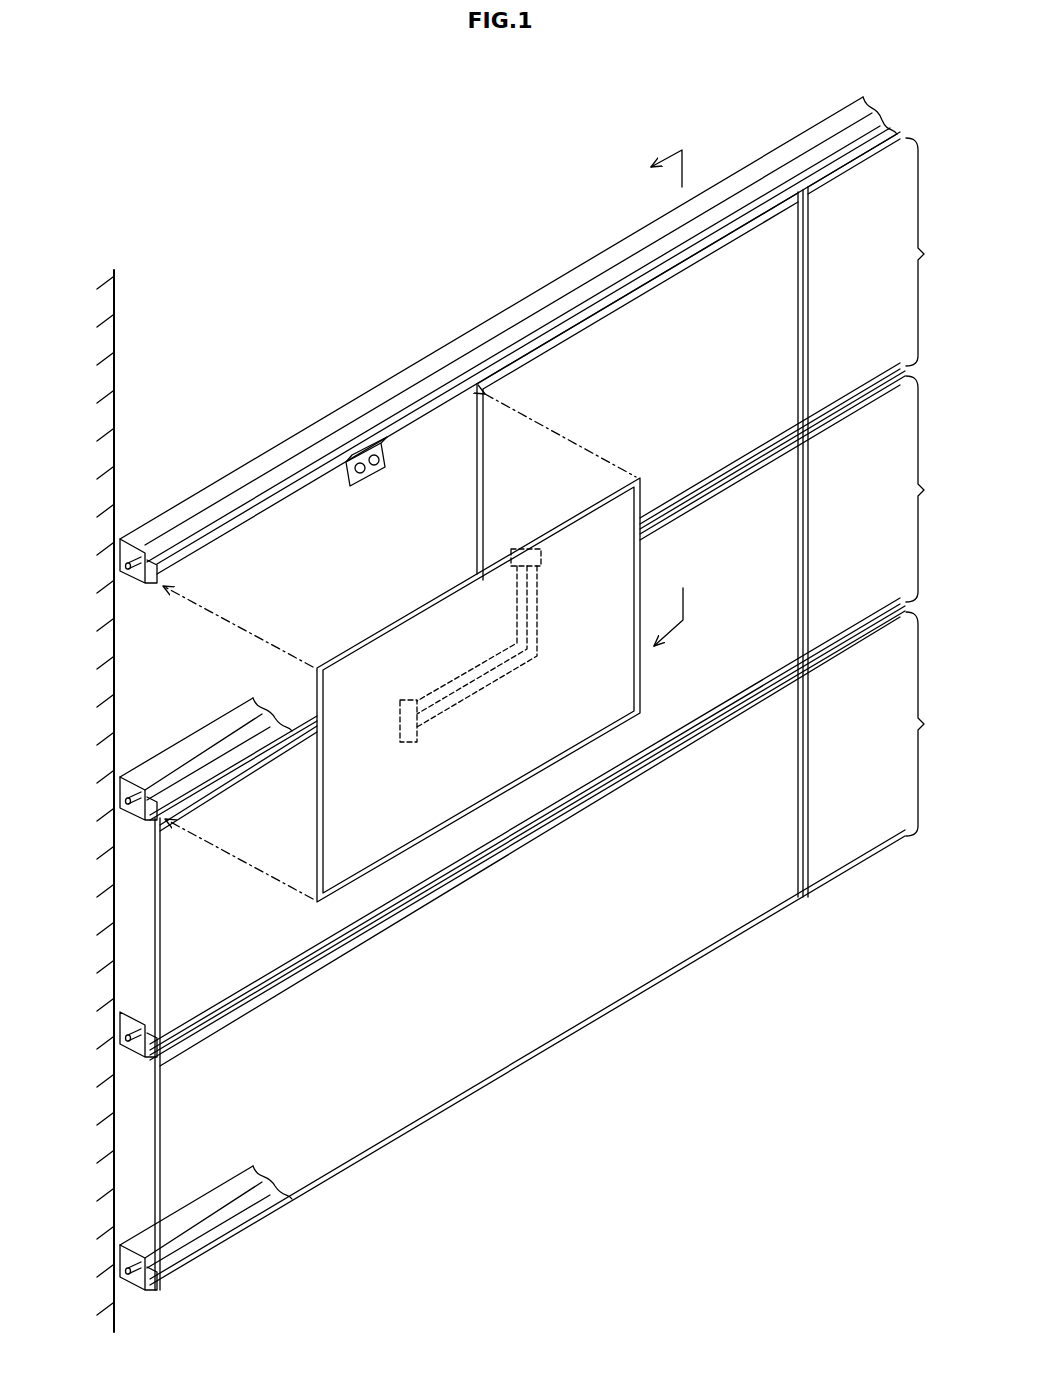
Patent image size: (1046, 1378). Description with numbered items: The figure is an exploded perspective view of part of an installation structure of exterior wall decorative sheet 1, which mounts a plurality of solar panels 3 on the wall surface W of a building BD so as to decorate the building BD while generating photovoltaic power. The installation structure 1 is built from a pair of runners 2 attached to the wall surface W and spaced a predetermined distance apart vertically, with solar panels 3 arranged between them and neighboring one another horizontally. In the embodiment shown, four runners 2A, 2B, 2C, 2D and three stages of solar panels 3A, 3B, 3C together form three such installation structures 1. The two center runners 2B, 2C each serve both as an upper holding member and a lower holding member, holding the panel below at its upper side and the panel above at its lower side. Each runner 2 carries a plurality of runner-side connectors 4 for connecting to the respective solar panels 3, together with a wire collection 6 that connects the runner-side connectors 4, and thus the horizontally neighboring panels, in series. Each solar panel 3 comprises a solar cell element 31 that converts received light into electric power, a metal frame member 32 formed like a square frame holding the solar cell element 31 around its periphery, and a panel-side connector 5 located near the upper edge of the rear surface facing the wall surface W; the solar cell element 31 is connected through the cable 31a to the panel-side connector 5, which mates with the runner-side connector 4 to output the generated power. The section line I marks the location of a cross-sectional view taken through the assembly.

The installation structure of exterior wall decorative sheet 1 is at (123, 480).
The runner 2 is at (481, 693).
The runner 2A is at (462, 336).
The runner 2B is at (145, 760).
The runner 2C is at (145, 996).
The runner 2D is at (147, 1230).
The solar panel 3 is at (511, 690).
The stage of solar panels 3A is at (882, 249).
The stage of solar panels 3B is at (931, 489).
The stage of solar panels 3C is at (931, 724).
The solar cell element 31 is at (407, 640).
The cable 31a is at (490, 684).
The frame member 32 is at (643, 668).
The runner-side connector 4 is at (370, 476).
The panel-side connector 5 is at (505, 582).
The wire collection 6 is at (130, 556).
The building BD is at (152, 754).
The wall surface W is at (142, 302).
The section line I is at (674, 391).